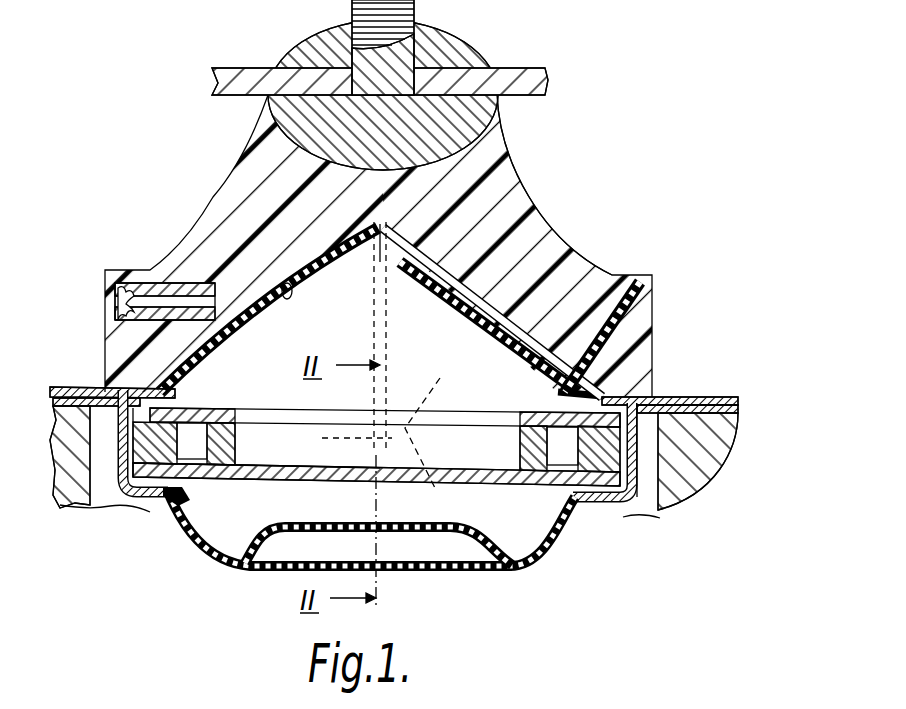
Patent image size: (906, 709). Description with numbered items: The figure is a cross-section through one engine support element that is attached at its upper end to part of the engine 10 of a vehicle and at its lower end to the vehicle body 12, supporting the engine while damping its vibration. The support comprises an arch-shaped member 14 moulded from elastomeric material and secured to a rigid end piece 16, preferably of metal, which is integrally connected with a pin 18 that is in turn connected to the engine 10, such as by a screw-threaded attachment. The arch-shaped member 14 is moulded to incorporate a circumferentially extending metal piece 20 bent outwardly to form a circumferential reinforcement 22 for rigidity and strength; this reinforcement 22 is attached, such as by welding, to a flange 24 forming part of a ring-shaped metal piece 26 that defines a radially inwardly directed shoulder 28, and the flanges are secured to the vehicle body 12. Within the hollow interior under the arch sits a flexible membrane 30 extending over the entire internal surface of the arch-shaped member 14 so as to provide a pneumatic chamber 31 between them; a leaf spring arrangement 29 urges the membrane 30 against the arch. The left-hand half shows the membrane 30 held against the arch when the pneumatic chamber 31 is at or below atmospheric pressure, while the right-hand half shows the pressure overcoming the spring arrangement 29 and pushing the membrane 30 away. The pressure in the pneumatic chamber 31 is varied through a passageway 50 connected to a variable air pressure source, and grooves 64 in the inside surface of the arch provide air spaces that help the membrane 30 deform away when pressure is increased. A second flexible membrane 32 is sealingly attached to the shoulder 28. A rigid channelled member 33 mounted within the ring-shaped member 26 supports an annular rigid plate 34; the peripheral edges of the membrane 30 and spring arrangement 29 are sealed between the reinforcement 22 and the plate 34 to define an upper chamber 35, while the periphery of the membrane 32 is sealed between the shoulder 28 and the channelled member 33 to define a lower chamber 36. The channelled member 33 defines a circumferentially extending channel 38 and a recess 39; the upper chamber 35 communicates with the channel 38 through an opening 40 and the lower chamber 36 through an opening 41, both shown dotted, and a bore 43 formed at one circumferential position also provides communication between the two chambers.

The engine 10 is at (253, 72).
The vehicle body 12 is at (693, 477).
The arch-shaped member 14 is at (195, 243).
The rigid end piece 16 is at (300, 105).
The pin 18 is at (414, 26).
The circumferentially extending metal piece 20 is at (633, 280).
The circumferential reinforcement 22 is at (680, 397).
The flange 24 is at (675, 417).
The ring-shaped metal piece 26 is at (633, 473).
The shoulder 28 is at (620, 508).
The leaf spring arrangement 29 is at (273, 282).
The flexible membrane 30 is at (247, 308).
The pneumatic chamber 31 is at (470, 287).
The second flexible membrane 32 is at (258, 566).
The rigid channelled member 33 is at (222, 452).
The annular rigid plate 34 is at (200, 410).
The upper chamber 35 is at (429, 335).
The lower chamber 36 is at (293, 548).
The channel 38 is at (187, 435).
The recess 39 is at (433, 455).
The opening 40 is at (431, 423).
The opening 41 is at (322, 472).
The bore 43 is at (322, 438).
The passageway 50 is at (112, 300).
The grooves 64 is at (372, 295).